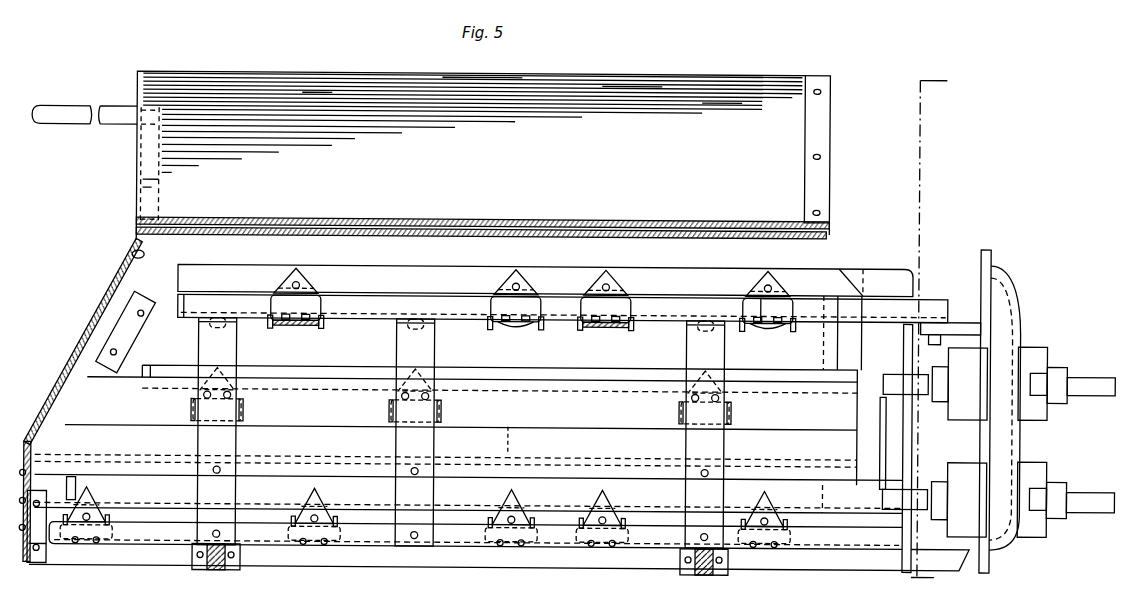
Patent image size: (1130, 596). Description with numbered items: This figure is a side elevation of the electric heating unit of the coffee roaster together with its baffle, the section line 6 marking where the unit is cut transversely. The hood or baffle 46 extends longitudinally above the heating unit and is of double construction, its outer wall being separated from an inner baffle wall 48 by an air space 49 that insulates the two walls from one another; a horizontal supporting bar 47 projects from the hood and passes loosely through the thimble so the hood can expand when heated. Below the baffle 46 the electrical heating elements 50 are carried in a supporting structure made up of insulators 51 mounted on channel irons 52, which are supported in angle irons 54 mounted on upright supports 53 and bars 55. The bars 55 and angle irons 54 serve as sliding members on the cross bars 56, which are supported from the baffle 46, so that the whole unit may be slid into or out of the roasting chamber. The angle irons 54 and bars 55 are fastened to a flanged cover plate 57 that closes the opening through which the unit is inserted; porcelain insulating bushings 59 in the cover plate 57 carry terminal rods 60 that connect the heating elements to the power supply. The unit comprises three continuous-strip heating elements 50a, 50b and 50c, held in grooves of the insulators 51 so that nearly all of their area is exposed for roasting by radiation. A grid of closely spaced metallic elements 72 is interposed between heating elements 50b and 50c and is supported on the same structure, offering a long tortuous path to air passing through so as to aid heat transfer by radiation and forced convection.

The section line 6- 6 is at (925, 327).
The hood or baffle 46 is at (583, 78).
The horizontal supporting bar 47 is at (103, 104).
The inner baffle wall 48 is at (695, 238).
The air space 49 is at (723, 231).
The electrical heating elements 50 is at (545, 270).
The heating element 50a is at (482, 278).
The heating element 50b is at (446, 411).
The heating element 50c is at (587, 492).
The insulators 51 is at (299, 273).
The channel irons 52 is at (302, 330).
The upright supports 53 is at (230, 444).
The angle irons 54 is at (931, 303).
The bars 55 is at (870, 545).
The cross bars 56 is at (218, 570).
The flanged cover plate 57 is at (986, 436).
The porcelain insulating bushings 59 is at (1057, 481).
The terminal rods 60 is at (1088, 393).
The metallic elements (grid) 72 is at (499, 430).